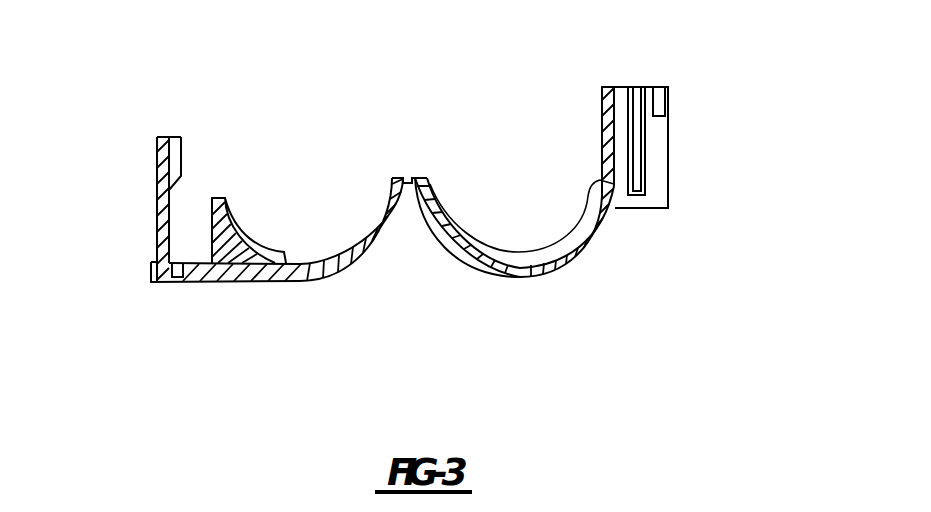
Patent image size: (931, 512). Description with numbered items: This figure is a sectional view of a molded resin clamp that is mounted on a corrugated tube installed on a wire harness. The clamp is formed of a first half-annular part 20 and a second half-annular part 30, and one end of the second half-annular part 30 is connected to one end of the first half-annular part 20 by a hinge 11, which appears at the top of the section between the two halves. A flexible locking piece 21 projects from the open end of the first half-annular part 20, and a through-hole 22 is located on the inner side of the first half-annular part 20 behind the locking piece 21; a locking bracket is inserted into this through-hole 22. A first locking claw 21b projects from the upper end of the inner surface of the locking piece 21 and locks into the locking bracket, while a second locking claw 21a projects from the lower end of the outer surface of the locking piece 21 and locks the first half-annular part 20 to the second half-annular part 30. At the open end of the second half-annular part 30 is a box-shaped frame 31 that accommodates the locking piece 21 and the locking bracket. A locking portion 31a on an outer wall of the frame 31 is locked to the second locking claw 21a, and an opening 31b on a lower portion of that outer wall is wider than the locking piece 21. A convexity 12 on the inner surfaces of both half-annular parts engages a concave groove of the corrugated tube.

The hinge 11 is at (408, 181).
The convexity 12 is at (233, 230).
The first half-annular part 20 is at (330, 277).
The locking piece 21 is at (159, 137).
The second locking claw 21a is at (157, 233).
The first locking claw 21b is at (177, 138).
The through-hole 22 is at (177, 278).
The second half-annular part 30 is at (532, 272).
The frame 31 is at (640, 209).
The locking portion 31a is at (658, 101).
The opening 31b is at (650, 138).